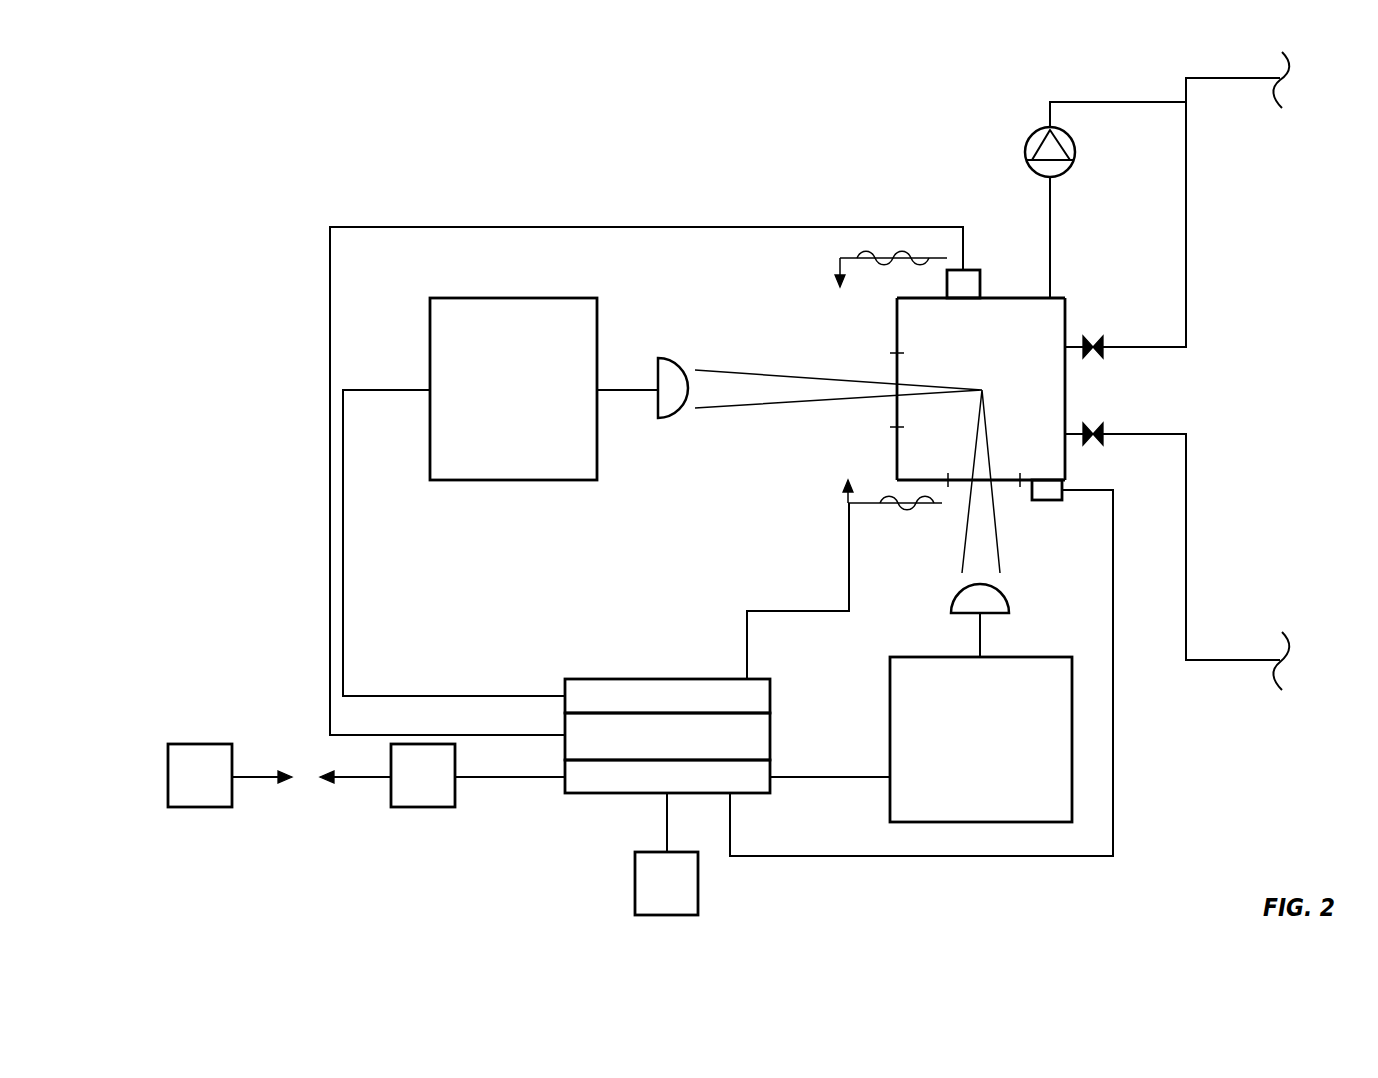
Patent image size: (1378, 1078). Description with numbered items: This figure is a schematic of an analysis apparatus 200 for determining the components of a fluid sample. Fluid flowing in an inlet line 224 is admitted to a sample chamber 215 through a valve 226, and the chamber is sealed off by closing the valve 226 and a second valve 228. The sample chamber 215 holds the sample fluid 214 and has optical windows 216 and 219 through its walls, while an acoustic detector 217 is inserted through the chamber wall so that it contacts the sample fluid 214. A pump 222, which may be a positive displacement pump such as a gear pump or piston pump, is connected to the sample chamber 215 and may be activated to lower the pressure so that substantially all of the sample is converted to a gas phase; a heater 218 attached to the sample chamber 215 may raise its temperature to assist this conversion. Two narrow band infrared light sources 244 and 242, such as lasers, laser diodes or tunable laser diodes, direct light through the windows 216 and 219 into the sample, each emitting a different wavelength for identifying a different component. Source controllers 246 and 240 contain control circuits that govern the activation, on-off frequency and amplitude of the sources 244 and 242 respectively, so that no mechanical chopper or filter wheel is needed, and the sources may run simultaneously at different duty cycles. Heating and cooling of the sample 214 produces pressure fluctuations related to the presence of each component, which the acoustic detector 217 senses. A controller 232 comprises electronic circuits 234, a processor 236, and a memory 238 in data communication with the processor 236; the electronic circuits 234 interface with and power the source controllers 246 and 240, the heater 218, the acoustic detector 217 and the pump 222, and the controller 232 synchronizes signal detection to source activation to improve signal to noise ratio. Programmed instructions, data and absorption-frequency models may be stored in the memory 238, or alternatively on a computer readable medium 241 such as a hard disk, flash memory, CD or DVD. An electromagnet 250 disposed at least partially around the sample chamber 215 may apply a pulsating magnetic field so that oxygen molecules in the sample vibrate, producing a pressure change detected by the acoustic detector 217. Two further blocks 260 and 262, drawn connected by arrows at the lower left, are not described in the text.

The analysis apparatus 200 is at (225, 90).
The sample fluid 214 is at (1052, 327).
The sample chamber 215 is at (1067, 325).
The optical window 216 is at (896, 367).
The acoustic detector 217 is at (970, 270).
The heater 218 is at (1066, 482).
The optical window 219 is at (967, 482).
The pump 222 is at (1036, 130).
The inlet line 224 is at (1187, 538).
The valve 226 is at (1097, 425).
The valve 228 is at (1097, 357).
The controller 232 is at (597, 618).
The electronic circuits 234 is at (772, 685).
The processor 236 is at (772, 720).
The memory 238 is at (772, 765).
The source controller 240 is at (1020, 656).
The computer readable medium 241 is at (647, 915).
The light source 242 is at (1003, 593).
The light source 244 is at (672, 358).
The source controller 246 is at (573, 298).
The electromagnet 250 is at (840, 258).
The transmitter 260 is at (440, 807).
The receiver 262 is at (222, 807).